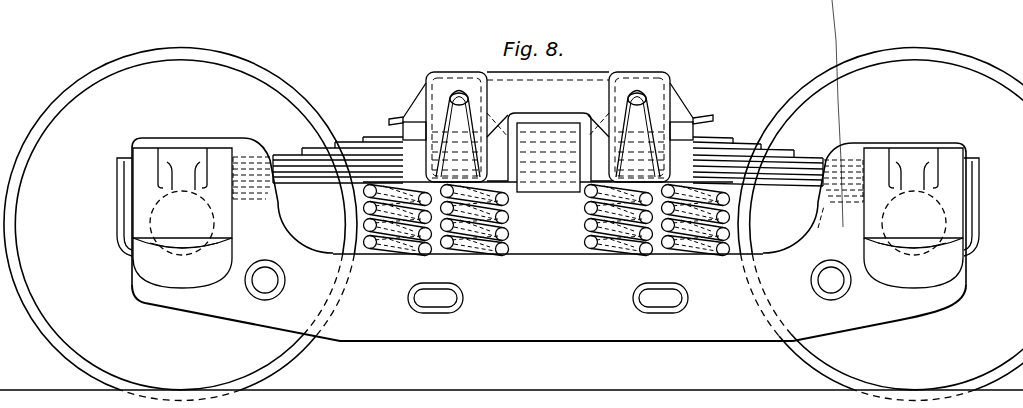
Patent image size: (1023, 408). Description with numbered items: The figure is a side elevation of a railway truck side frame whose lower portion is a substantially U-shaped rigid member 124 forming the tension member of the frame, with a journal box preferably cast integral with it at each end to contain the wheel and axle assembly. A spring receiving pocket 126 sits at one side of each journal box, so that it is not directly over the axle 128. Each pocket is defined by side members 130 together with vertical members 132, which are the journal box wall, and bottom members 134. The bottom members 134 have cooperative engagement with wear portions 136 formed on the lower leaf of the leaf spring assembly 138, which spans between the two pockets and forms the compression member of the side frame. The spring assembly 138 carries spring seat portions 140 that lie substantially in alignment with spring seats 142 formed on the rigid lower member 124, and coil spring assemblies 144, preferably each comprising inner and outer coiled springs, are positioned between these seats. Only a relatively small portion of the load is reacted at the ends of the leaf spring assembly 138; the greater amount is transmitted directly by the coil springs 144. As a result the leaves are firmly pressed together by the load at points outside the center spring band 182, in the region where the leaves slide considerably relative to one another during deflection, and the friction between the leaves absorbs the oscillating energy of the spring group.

The substantially U-shaped rigid member 124 is at (518, 336).
The spring receiving pocket 126 is at (248, 147).
The axle 128 is at (157, 213).
The side members 130 is at (855, 152).
The vertical members 132 is at (867, 173).
The bottom members 134 is at (846, 205).
The wear portions 136 is at (840, 192).
The spring assembly 138 is at (739, 138).
The spring seat portions 140 is at (367, 211).
The spring seats 142 is at (466, 255).
The spring assemblies 144 is at (651, 255).
The center spring band 182 is at (543, 193).